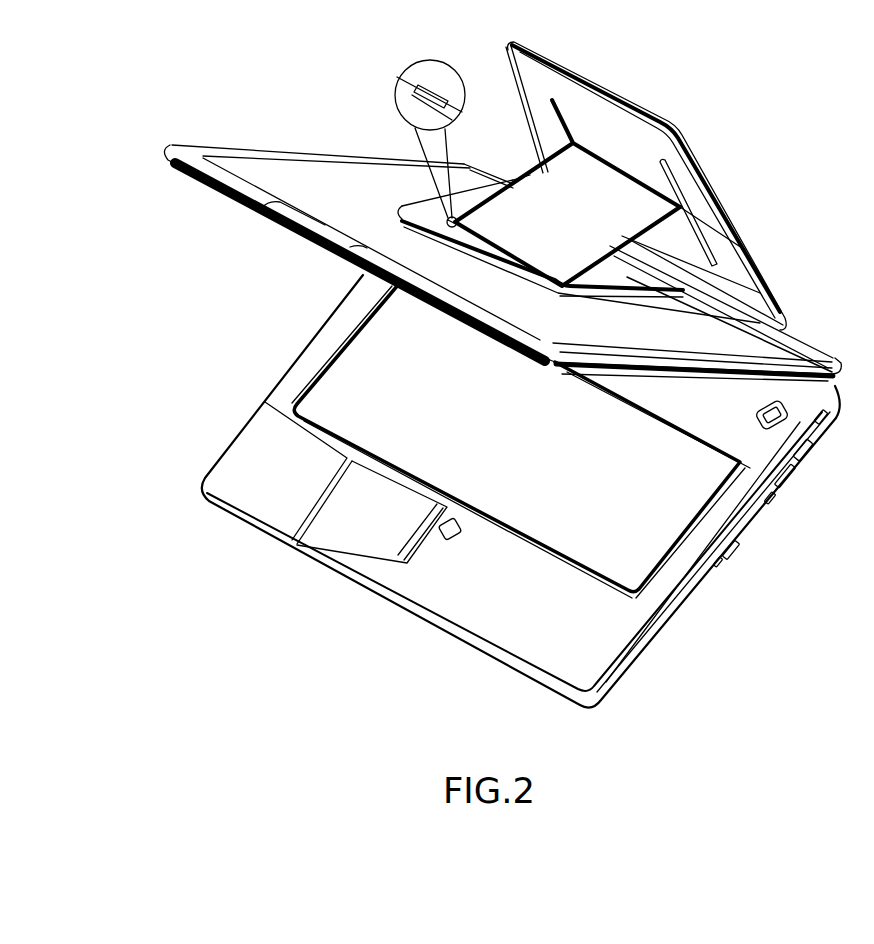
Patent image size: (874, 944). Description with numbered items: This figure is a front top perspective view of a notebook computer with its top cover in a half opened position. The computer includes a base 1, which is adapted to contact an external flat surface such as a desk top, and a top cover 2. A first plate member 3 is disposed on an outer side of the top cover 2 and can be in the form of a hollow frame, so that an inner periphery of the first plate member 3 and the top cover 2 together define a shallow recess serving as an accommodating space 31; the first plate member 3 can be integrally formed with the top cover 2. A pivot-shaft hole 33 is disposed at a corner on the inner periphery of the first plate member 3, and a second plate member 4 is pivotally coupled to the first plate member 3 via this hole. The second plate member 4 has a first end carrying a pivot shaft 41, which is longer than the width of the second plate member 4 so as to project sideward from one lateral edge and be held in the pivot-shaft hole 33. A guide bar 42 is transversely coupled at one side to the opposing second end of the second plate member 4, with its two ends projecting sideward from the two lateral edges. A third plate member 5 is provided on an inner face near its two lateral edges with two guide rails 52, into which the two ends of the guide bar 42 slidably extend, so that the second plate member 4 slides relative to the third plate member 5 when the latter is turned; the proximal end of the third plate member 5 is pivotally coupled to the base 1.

The base 1 is at (213, 463).
The top cover 2 is at (173, 145).
The first plate member 3 is at (433, 212).
The accommodating space 31 is at (807, 435).
The pivot-shaft hole 33 is at (398, 88).
The second plate member 4 is at (515, 185).
The pivot shaft 41 is at (445, 90).
The guide bar 42 is at (647, 180).
The third plate member 5 is at (587, 77).
The guide rails 52 is at (582, 112).